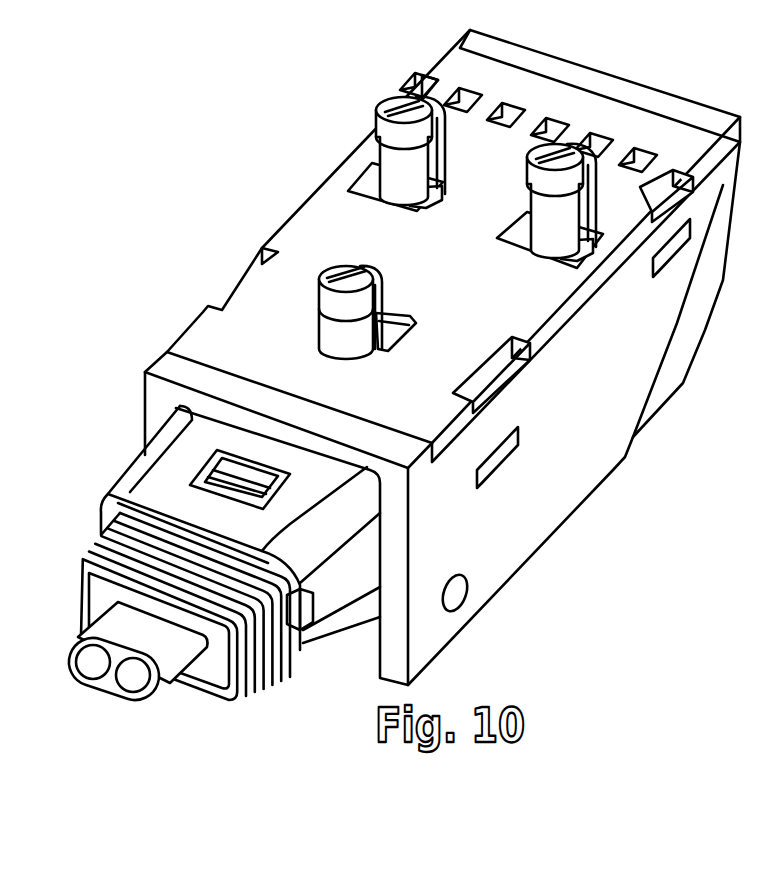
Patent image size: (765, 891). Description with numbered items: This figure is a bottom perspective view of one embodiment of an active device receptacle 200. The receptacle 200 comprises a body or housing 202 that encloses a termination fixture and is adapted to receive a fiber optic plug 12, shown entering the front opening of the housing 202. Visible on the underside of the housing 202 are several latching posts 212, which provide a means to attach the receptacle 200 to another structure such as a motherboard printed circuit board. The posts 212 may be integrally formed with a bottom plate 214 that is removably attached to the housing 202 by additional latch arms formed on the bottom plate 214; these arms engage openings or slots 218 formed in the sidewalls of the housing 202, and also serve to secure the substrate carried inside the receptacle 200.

The active device receptacle 200 is at (222, 215).
The latching posts 212 is at (383, 106).
The bottom plate 214 is at (456, 272).
The slots 218 is at (663, 262).
The housing 202 is at (597, 524).
The fiber optic plug 12 is at (104, 456).